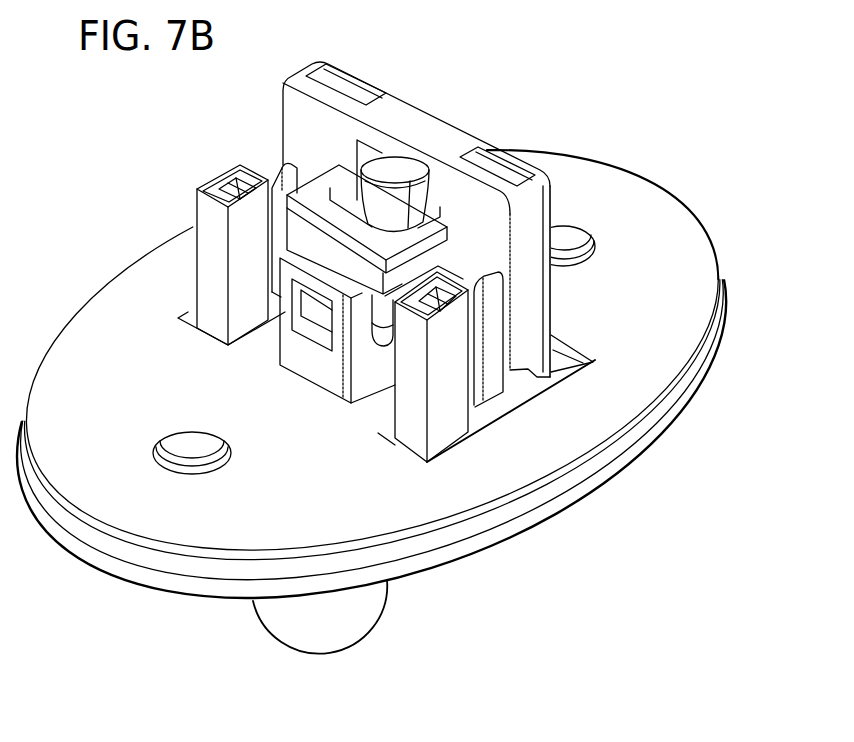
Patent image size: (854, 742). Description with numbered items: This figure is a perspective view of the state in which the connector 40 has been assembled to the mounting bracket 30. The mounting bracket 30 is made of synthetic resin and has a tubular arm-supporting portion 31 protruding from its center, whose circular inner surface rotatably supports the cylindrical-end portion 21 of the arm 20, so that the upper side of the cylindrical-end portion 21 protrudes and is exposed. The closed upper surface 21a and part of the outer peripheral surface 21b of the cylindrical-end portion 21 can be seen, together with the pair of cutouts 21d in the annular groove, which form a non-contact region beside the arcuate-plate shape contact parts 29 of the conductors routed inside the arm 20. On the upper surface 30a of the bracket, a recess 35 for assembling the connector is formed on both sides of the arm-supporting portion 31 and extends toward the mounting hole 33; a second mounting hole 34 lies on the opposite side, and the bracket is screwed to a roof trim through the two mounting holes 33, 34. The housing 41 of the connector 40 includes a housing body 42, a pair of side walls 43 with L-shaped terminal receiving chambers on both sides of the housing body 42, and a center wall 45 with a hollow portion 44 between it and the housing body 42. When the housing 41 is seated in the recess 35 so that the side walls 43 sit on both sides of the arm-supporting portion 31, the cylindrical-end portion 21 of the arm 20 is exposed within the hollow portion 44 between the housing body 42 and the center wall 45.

The arm 20 is at (383, 617).
The cylindrical-end portion 21 is at (392, 158).
The upper surface 21a is at (412, 170).
The outer peripheral surface 21b is at (322, 190).
The cutout 21d is at (362, 142).
The contact part 29 is at (300, 192).
The mounting bracket 30 is at (563, 519).
The upper surface 30a is at (562, 428).
The arm-supporting portion 31 is at (377, 385).
The mounting hole 33 is at (575, 238).
The mounting hole 34 is at (190, 438).
The recess for assembling the connector 35 is at (566, 352).
The connector 40 is at (463, 123).
The housing 41 is at (559, 285).
The housing body 42 is at (456, 140).
The side wall 43 is at (210, 225).
The hollow portion 44 is at (519, 177).
The center wall 45 is at (283, 187).